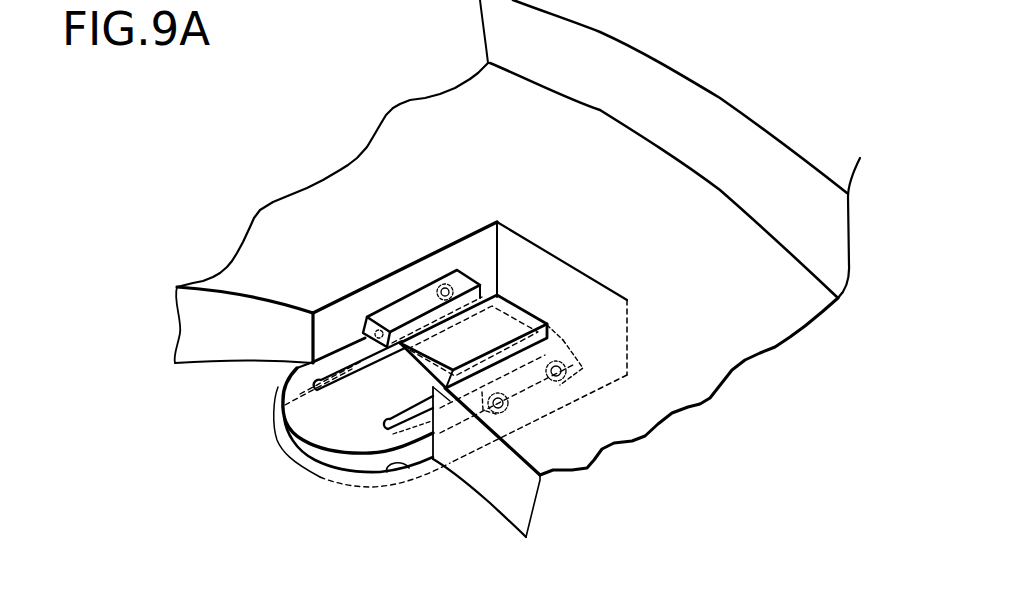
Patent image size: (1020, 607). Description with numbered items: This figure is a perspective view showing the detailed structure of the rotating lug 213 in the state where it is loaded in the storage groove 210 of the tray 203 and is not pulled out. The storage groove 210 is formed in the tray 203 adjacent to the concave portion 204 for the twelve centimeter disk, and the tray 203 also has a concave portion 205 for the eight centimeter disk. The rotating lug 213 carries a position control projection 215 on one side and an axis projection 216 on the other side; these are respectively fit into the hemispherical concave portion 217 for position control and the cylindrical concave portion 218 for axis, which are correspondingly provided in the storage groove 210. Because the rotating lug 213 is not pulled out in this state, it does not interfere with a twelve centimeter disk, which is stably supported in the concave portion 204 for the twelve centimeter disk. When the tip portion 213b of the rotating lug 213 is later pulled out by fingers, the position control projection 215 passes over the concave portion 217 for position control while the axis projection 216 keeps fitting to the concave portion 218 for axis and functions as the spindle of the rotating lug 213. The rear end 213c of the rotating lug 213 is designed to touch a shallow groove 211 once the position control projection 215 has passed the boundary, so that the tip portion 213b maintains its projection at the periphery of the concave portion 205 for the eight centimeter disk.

The tray 203 is at (728, 123).
The concave portion for 12 cm disk 204 is at (643, 430).
The concave portion for 8 cm disk 205 is at (473, 552).
The storage groove 210 is at (475, 258).
The shallow groove 211 is at (405, 467).
The rotating lug 213 is at (345, 403).
The tip portion 213b is at (323, 432).
The rear end 213c is at (515, 313).
The position control projection 215 is at (496, 413).
The axis projection 216 is at (561, 375).
The concave portion for position control 217 is at (507, 397).
The concave portion for axis 218 is at (563, 363).